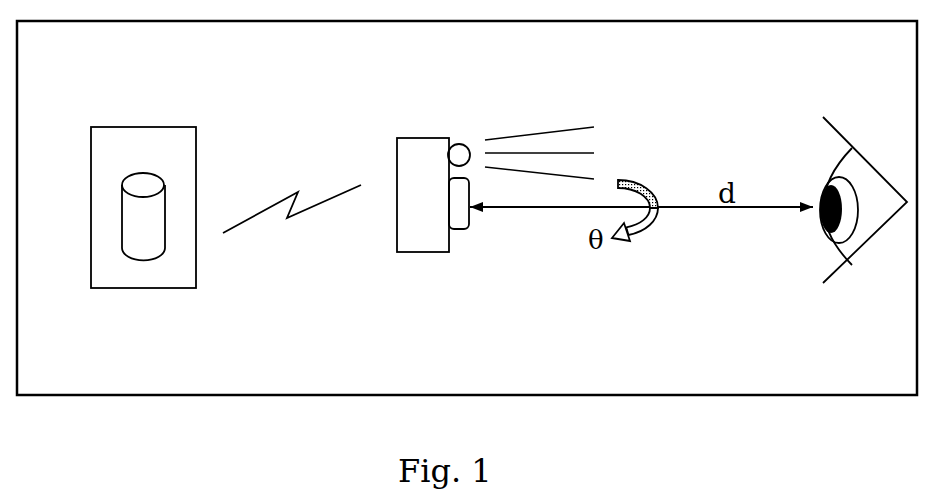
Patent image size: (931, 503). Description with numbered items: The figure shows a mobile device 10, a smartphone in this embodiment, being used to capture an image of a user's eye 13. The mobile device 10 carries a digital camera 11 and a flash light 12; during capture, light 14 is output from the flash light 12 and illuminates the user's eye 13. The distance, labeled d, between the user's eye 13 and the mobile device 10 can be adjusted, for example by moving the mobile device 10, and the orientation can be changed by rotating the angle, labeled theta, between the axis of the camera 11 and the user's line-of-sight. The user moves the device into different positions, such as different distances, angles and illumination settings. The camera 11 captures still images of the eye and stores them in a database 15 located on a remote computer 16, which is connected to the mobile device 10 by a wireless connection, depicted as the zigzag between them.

The mobile device 10 is at (422, 252).
The digital camera 11 is at (463, 229).
The flash light 12 is at (455, 143).
The user's eye 13 is at (837, 123).
The light 14 is at (572, 130).
The database 15 is at (122, 228).
The remote computer 16 is at (135, 127).